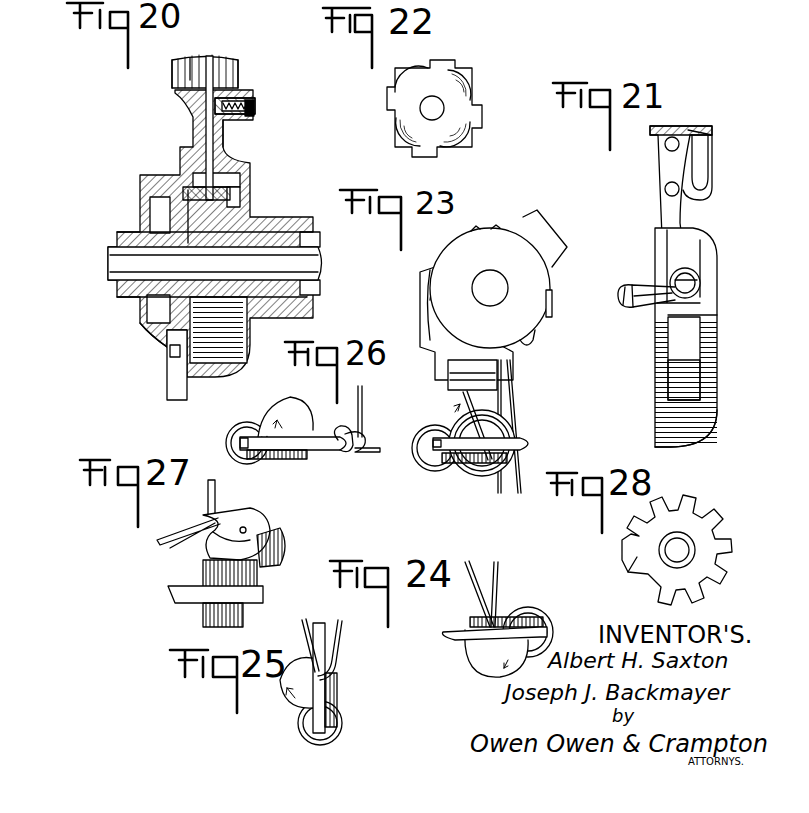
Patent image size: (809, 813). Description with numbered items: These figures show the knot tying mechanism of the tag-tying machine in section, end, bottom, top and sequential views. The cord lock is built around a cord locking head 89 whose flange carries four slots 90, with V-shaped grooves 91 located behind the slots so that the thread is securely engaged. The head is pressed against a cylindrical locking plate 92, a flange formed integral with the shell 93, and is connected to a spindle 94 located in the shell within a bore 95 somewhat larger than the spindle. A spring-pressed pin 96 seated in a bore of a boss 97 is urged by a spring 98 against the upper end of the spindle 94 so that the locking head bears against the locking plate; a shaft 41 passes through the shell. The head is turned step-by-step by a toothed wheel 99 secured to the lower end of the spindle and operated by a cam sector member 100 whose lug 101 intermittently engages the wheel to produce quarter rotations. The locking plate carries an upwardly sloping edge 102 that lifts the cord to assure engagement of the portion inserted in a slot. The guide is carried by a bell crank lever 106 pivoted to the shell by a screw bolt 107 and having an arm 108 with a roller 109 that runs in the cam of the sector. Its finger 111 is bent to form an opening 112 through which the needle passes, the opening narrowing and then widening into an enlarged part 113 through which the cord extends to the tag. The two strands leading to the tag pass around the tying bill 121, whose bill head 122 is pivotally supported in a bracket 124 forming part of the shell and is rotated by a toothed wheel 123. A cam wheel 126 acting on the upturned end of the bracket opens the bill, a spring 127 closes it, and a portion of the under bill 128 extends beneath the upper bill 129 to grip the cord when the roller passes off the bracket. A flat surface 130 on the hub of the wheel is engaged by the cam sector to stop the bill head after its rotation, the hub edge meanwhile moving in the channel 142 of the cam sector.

In FIG. 20, the shaft 41 is at (115, 259).
In FIG. 20, the cord locking head 89 is at (243, 70).
In FIG. 20, the slots 90 is at (190, 62).
In FIG. 23, the slots 90 is at (533, 352).
In FIG. 20, the grooves 91 is at (200, 62).
In FIG. 23, the grooves 91 is at (475, 228).
In FIG. 20, the cylindrical locking plate 92 is at (173, 78).
In FIG. 20, the shell 93 is at (247, 162).
In FIG. 20, the spindle 94 is at (204, 130).
In FIG. 20, the bore 95 is at (223, 128).
In FIG. 20, the spring-pressed pin 96 is at (252, 95).
In FIG. 20, the boss 97 is at (253, 120).
In FIG. 23, the boss 97 is at (547, 235).
In FIG. 20, the spring 98 is at (257, 98).
In FIG. 20, the toothed wheel 99 is at (233, 193).
In FIG. 20, the cam sector member 100 is at (145, 332).
In FIG. 20, the lug 101 is at (170, 348).
In FIG. 23, the upwardly sloping edge 102 is at (493, 357).
In FIG. 21, the bell crank lever 106 is at (672, 222).
In FIG. 21, the screw bolt 107 is at (692, 279).
In FIG. 21, the arm 108 is at (642, 286).
In FIG. 21, the roller 109 is at (623, 308).
In FIG. 21, the finger 111 is at (710, 162).
In FIG. 21, the opening 112 is at (690, 172).
In FIG. 21, the enlarged part of the opening 113 is at (698, 181).
In FIG. 23, the tying bill 121 is at (530, 442).
In FIG. 27, the bill head 122 is at (230, 522).
In FIG. 28, the toothed wheel 123 is at (697, 558).
In FIG. 27, the bracket 124 is at (265, 592).
In FIG. 23, the cam wheel 126 is at (438, 470).
In FIG. 26, the cam wheel 126 is at (248, 427).
In FIG. 27, the cam wheel 126 is at (283, 542).
In FIG. 25, the cam wheel 126 is at (330, 728).
In FIG. 24, the cam wheel 126 is at (548, 626).
In FIG. 23, the spring 127 is at (455, 460).
In FIG. 26, the spring 127 is at (303, 458).
In FIG. 25, the spring 127 is at (338, 686).
In FIG. 24, the spring 127 is at (523, 622).
In FIG. 23, the under bill 128 is at (523, 455).
In FIG. 26, the under bill 128 is at (318, 437).
In FIG. 27, the under bill 128 is at (188, 535).
In FIG. 25, the under bill 128 is at (337, 648).
In FIG. 24, the under bill 128 is at (457, 630).
In FIG. 23, the upper bill 129 is at (482, 433).
In FIG. 26, the upper bill 129 is at (285, 417).
In FIG. 27, the upper bill 129 is at (190, 505).
In FIG. 25, the upper bill 129 is at (310, 650).
In FIG. 24, the upper bill 129 is at (462, 637).
In FIG. 28, the flat surface 130 is at (630, 566).
In FIG. 22, the channel 142 is at (517, 0).